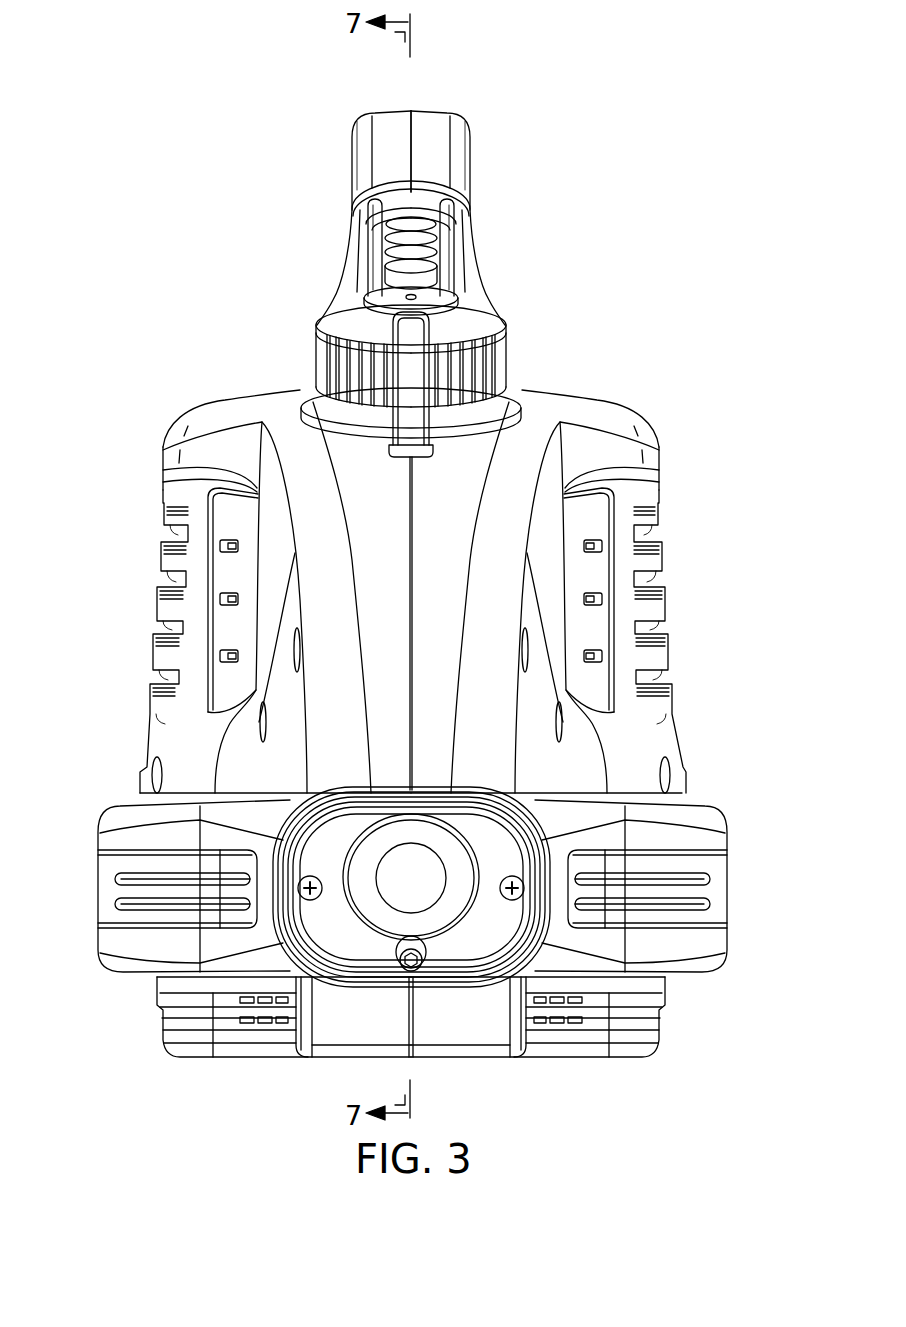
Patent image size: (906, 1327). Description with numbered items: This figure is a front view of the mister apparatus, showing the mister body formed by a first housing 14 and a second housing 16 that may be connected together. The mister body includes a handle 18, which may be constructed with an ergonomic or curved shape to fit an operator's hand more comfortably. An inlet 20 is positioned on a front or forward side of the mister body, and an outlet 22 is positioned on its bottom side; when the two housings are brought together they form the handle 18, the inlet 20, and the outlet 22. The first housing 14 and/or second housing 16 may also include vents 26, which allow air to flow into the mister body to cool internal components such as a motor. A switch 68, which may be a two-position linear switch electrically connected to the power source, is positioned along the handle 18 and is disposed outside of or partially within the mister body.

The first housing 14 is at (102, 838).
The second housing 16 is at (723, 842).
The handle 18 is at (396, 112).
The inlet 20 is at (537, 1060).
The outlet 22 is at (433, 893).
The vents 26 is at (163, 576).
The switch 68 is at (392, 228).